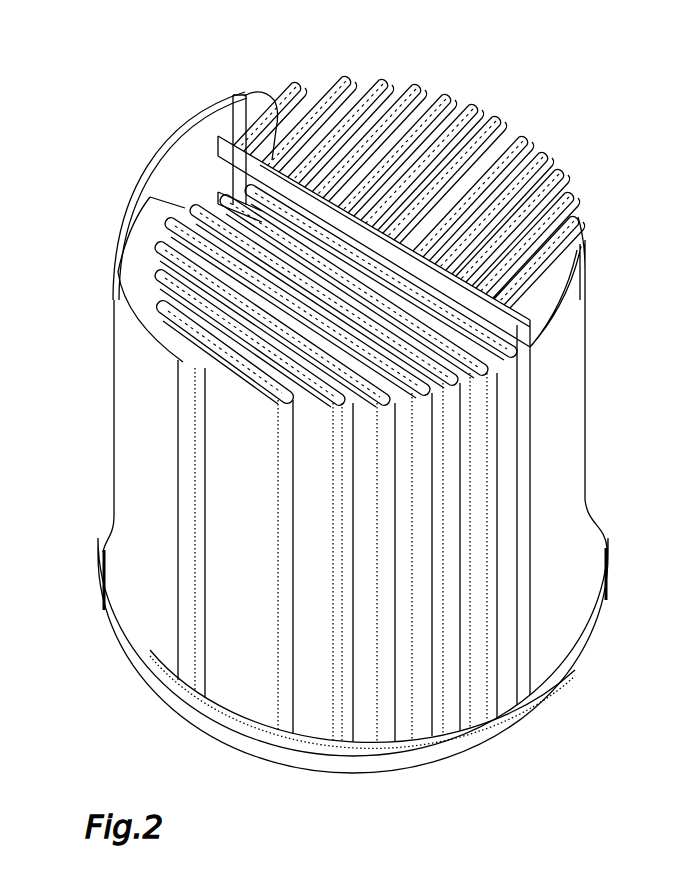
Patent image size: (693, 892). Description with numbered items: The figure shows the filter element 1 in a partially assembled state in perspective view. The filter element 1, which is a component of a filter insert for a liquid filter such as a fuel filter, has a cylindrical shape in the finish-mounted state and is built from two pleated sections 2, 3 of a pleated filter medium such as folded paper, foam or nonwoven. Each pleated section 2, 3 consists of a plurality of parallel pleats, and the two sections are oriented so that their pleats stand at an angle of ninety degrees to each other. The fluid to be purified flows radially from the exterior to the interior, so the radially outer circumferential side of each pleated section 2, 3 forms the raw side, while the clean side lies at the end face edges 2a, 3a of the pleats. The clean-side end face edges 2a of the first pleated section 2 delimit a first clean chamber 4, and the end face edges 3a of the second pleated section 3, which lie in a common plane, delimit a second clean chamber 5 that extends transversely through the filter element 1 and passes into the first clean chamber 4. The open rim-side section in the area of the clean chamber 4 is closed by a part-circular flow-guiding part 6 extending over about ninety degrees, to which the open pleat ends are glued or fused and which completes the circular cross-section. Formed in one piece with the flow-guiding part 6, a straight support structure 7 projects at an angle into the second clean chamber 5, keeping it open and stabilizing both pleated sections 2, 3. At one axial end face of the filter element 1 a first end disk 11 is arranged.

The filter element 1 is at (200, 87).
The first pleated section 2 is at (324, 720).
The end face edges of the first pleated section 2a is at (158, 245).
The second pleated section 3 is at (512, 113).
The end face edges of the second pleated section 3a is at (263, 100).
The first clean chamber 4 is at (176, 169).
The second clean chamber 5 is at (523, 297).
The flow-guiding part 6 is at (125, 343).
The support structure 7 is at (514, 322).
The first end disk 11 is at (418, 754).